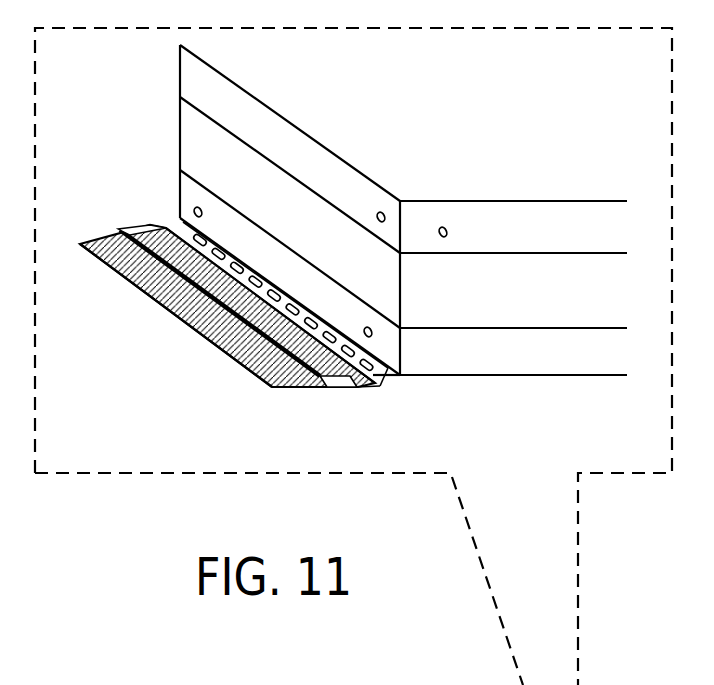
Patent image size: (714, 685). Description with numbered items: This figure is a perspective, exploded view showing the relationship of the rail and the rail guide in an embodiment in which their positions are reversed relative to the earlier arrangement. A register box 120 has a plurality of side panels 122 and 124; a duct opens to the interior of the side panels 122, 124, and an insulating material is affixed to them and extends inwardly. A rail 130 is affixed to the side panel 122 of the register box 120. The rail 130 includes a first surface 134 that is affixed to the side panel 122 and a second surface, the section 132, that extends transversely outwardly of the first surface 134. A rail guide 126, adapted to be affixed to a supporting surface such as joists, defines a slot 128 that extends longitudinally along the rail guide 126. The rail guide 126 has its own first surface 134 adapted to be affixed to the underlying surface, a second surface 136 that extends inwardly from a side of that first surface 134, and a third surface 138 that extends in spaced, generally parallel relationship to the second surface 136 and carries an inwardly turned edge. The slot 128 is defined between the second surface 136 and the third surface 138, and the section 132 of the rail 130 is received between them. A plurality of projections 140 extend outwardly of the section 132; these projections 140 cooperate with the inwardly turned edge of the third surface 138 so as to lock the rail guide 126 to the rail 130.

The register box 120 is at (190, 141).
The side panel 122 is at (186, 196).
The side panel 124 is at (523, 363).
The rail guide 126 is at (290, 390).
The slot 128 is at (357, 383).
The rail 130 is at (400, 380).
The section 132 is at (150, 223).
The first surface 134 is at (222, 344).
The second surface 136 is at (340, 390).
The third surface 138 is at (182, 265).
The projections 140 is at (272, 293).